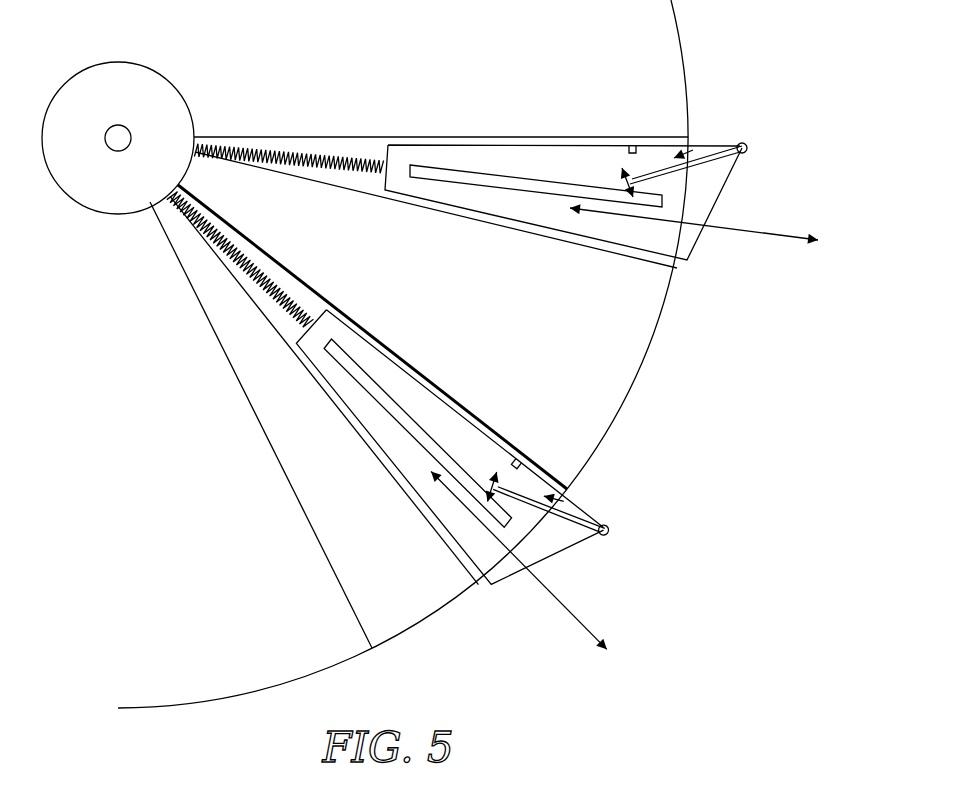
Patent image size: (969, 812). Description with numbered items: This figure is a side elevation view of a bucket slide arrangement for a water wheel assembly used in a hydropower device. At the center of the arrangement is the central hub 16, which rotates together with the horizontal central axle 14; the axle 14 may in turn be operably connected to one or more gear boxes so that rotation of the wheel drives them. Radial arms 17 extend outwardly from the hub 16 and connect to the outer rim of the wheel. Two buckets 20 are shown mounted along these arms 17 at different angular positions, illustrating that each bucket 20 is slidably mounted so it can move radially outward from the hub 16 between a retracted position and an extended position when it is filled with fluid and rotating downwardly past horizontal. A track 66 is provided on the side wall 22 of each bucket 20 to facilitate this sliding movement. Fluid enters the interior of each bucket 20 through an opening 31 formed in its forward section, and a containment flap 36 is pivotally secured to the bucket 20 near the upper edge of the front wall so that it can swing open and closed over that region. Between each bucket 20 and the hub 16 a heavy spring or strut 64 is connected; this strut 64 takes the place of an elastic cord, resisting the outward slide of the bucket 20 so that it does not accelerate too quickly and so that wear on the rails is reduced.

The central axle 14 is at (118, 132).
The central hub 16 is at (102, 197).
The radial arm 17 is at (390, 195).
The bucket 20 is at (558, 147).
The side wall 22 is at (612, 148).
The opening 31 is at (693, 147).
The containment flap 36 is at (717, 160).
The strut 64 is at (308, 158).
The track 66 is at (438, 175).